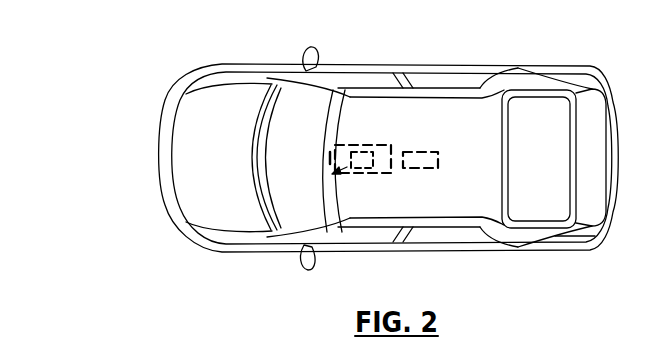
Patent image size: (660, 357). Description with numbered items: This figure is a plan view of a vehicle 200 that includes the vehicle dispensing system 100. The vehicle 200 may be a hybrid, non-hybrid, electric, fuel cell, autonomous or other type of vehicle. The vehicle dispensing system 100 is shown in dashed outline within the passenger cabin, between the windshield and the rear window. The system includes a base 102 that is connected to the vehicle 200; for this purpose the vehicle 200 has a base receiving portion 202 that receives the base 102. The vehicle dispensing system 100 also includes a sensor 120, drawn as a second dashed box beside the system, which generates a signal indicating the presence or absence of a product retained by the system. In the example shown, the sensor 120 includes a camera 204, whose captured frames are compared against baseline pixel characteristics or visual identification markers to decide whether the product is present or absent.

The vehicle 200 is at (158, 64).
The vehicle dispensing system 100 is at (362, 148).
The sensor 120 is at (434, 152).
The base receiving portion 202 is at (329, 158).
The base 102 is at (336, 172).
The camera 204 is at (438, 160).